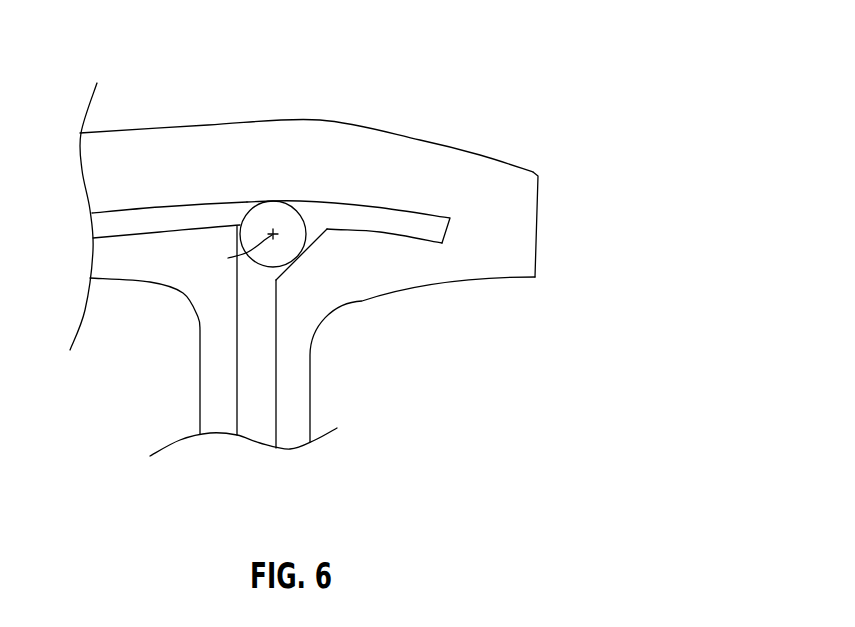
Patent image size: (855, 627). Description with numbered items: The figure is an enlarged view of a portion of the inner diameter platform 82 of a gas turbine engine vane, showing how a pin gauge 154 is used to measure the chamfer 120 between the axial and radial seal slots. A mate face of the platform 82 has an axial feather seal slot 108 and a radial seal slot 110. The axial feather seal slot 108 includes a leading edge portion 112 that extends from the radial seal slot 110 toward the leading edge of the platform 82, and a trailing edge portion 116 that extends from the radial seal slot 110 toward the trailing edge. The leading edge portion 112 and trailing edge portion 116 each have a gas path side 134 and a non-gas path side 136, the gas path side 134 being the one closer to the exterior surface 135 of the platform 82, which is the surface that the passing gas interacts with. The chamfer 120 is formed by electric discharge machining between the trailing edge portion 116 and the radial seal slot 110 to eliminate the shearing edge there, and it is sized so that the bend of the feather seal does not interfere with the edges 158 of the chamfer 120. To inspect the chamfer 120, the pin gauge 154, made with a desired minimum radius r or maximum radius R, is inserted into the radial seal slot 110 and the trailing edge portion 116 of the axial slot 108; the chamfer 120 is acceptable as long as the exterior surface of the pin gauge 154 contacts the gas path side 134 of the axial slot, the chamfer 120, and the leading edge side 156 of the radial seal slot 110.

The inner diameter platform 82 is at (304, 200).
The axial feather seal slot 108 is at (187, 212).
The radial seal slot 110 is at (256, 426).
The leading edge portion 112 is at (158, 226).
The trailing edge portion 116 is at (376, 208).
The chamfer 120 is at (304, 254).
The gas path side 134 is at (257, 154).
The exterior surface 135 is at (208, 125).
The non-gas path side 136 is at (107, 242).
The pin gauge 154 is at (282, 210).
The leading edge side 156 is at (235, 372).
The edges 158 is at (323, 235).